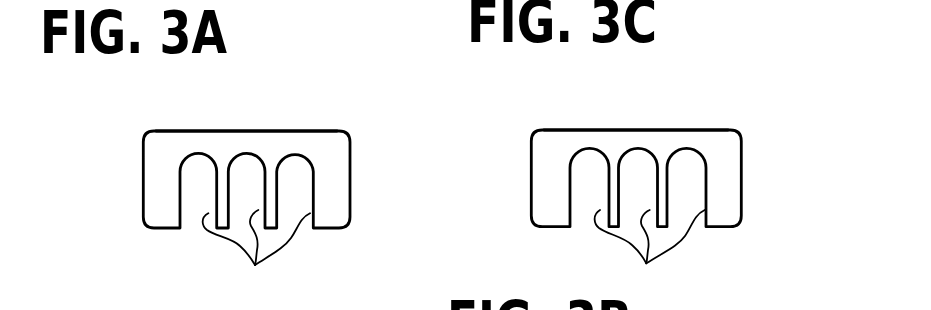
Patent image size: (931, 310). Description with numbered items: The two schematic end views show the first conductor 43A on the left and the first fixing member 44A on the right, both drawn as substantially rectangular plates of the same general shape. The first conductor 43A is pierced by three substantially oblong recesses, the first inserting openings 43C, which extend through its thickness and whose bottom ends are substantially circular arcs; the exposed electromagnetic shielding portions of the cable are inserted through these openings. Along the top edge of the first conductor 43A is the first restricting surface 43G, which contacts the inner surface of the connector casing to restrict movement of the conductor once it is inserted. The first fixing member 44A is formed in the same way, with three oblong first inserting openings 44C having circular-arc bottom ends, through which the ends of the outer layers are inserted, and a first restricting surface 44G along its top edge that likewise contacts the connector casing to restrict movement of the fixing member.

In FIG. 3A, the first conductor 43A is at (350, 178).
In FIG. 3A, the first restricting surface 43G is at (245, 132).
In FIG. 3A, the first inserting openings 43C is at (256, 258).
In FIG. 3C, the first fixing member 44A is at (741, 175).
In FIG. 3C, the first restricting surface 44G is at (637, 130).
In FIG. 3C, the first inserting openings 44C is at (650, 257).